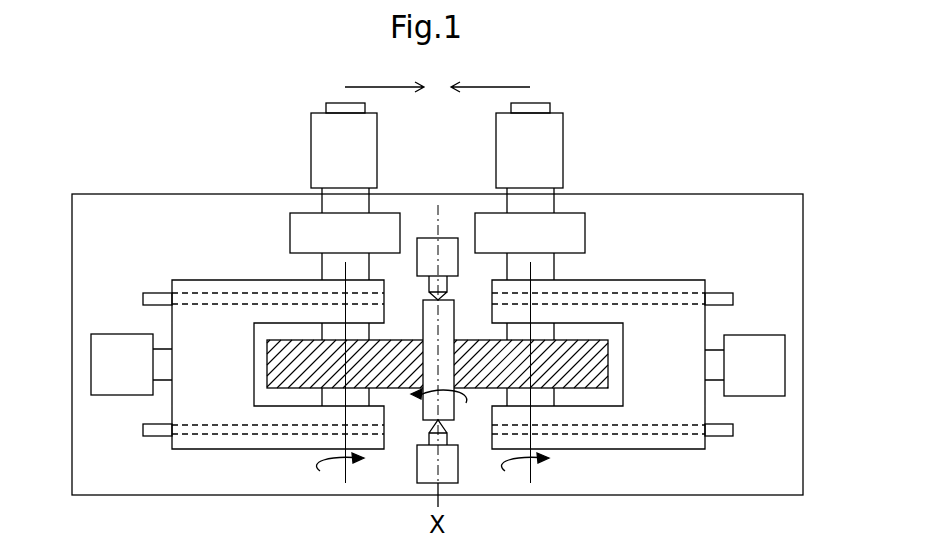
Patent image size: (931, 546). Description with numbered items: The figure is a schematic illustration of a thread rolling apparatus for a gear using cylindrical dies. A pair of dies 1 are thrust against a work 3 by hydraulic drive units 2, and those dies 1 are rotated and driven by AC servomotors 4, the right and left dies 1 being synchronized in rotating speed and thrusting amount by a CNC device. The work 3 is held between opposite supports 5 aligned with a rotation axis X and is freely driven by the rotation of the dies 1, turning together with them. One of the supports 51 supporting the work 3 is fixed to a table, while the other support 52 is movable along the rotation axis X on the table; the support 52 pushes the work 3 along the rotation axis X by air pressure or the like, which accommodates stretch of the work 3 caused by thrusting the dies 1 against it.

The dies 1 is at (267, 364).
The hydraulic drive units 2 is at (91, 367).
The work 3 is at (423, 410).
The AC servomotors 4 is at (311, 148).
The supports 5 is at (469, 348).
The support 51 is at (430, 237).
The support 52 is at (458, 466).